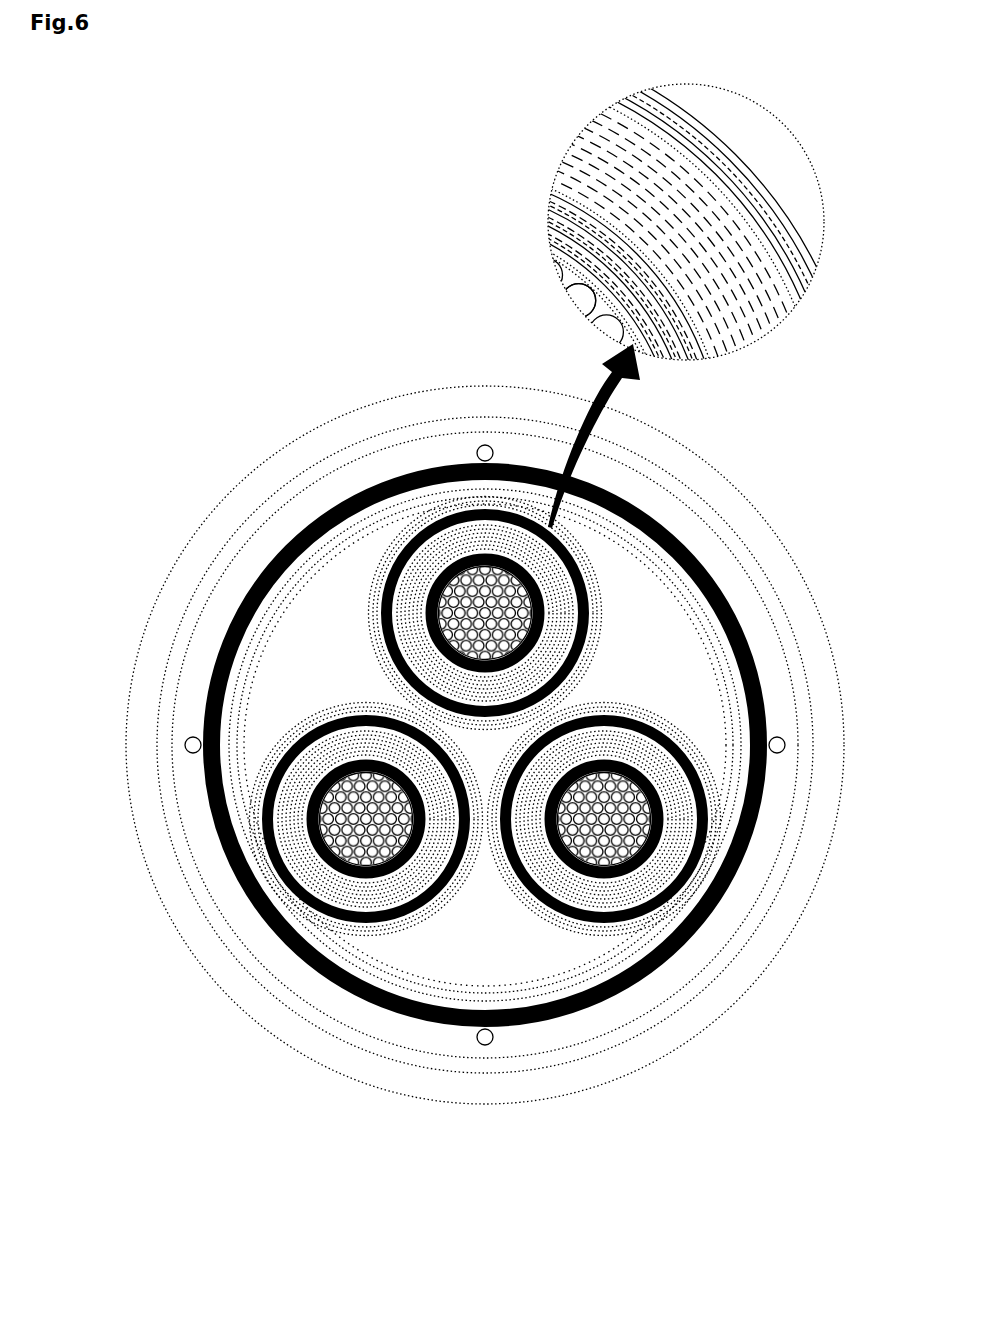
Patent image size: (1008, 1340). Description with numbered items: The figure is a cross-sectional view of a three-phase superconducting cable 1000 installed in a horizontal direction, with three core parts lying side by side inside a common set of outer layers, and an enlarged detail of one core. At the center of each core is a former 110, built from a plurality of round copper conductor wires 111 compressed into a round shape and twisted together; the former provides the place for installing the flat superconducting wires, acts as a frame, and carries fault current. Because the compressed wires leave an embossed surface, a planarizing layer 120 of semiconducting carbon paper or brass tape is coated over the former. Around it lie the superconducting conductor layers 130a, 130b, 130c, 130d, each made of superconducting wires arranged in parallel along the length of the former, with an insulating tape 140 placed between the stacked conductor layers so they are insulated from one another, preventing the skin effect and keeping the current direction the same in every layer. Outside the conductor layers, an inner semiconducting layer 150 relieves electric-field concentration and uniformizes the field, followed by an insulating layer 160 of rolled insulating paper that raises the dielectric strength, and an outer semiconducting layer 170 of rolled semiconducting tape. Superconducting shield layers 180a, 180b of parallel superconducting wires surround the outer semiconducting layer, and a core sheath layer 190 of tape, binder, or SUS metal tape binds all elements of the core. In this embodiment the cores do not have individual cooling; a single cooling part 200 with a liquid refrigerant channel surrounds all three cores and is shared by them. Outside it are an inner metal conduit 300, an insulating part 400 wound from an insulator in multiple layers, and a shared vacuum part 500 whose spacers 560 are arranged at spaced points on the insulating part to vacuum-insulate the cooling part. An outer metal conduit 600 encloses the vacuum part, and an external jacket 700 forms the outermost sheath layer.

The power cable assembly 1000 is at (248, 445).
The former 110 is at (590, 299).
The conductor wires 111 is at (574, 292).
The planarizing layer 120 is at (563, 273).
The first superconducting conductor layer 130a is at (548, 242).
The second superconducting conductor layer 130b is at (548, 223).
The third insulation layer 130c is at (548, 210).
The fourth insulation layer 130d is at (548, 198).
The insulating tape 140 is at (550, 203).
The inner semiconducting layer 150 is at (690, 362).
The insulating layer 160 is at (783, 272).
The outer semiconducting layer 170 is at (788, 232).
The first bedding layer 180a is at (817, 224).
The second bedding layer 180b is at (777, 163).
The core sheath layer 190 is at (772, 142).
The cooling part 200 is at (725, 757).
The inner metal conduit 300 is at (733, 818).
The insulating part 400 is at (710, 890).
The vacuum part 500 is at (673, 983).
The spacers 560 is at (485, 1046).
The outer metal conduit 600 is at (593, 1047).
The external jacket 700 is at (537, 1083).